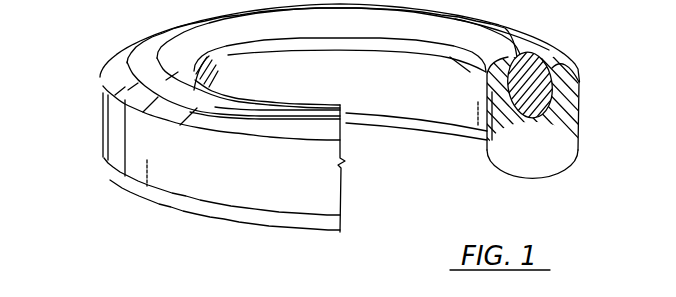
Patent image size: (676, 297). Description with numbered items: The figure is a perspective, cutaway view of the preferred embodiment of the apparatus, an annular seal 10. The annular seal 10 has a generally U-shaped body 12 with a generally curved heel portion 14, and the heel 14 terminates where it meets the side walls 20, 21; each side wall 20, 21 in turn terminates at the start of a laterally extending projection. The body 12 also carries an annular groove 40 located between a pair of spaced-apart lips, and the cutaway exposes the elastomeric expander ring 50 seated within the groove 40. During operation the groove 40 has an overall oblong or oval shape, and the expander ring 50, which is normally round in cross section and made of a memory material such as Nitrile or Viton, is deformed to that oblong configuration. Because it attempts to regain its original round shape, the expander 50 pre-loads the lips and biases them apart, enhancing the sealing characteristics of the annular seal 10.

The annular seal 10 is at (146, 15).
The body 12 is at (545, 166).
The heel portion 14 is at (287, 224).
The side wall 20 is at (431, 108).
The side wall 21 is at (294, 191).
The annular groove 40 is at (146, 69).
The elastomeric expander ring 50 is at (150, 78).